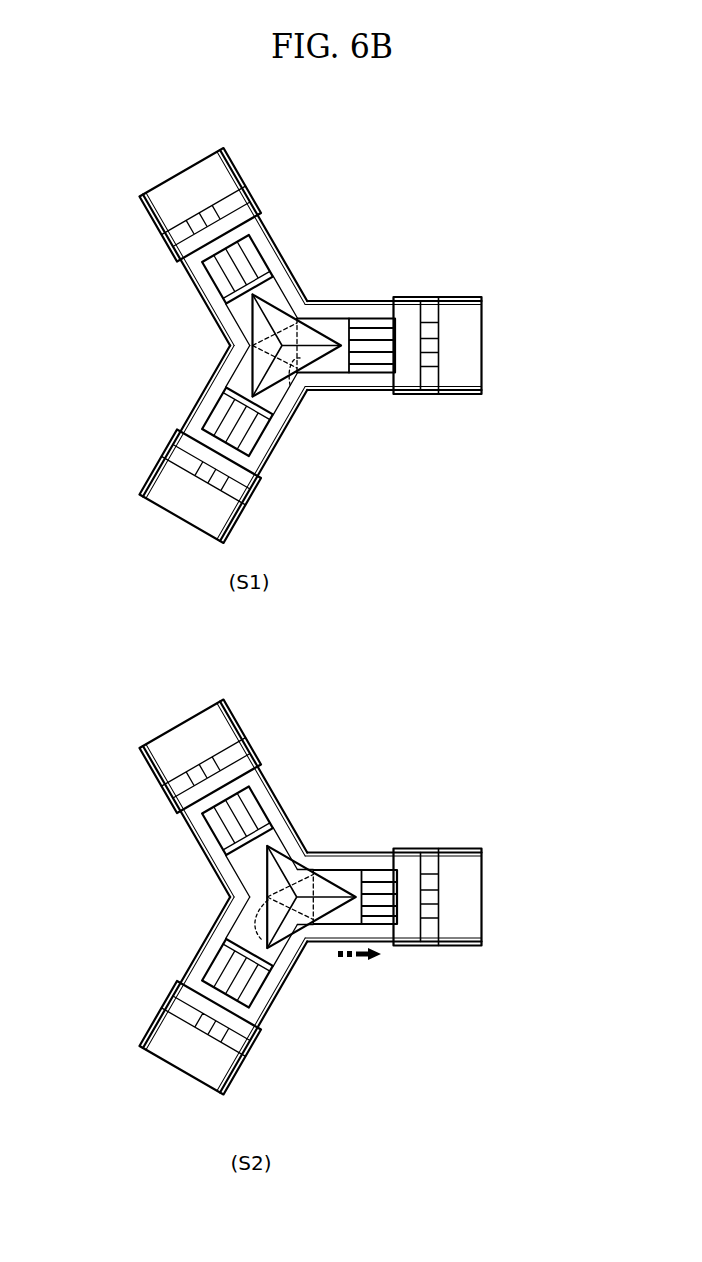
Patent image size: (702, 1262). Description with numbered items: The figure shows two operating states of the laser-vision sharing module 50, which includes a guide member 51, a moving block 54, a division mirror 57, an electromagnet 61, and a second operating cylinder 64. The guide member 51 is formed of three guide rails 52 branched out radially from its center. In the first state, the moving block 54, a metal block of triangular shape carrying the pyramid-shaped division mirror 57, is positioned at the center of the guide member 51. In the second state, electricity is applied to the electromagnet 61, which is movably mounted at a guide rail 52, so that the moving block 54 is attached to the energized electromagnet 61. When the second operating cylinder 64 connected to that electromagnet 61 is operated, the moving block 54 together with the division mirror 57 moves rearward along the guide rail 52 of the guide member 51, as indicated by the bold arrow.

The laser-vision sharing module 50 is at (268, 101).
The guide member 51 is at (199, 319).
The guide rail 52 is at (325, 925).
The moving block 54 is at (290, 385).
The division mirror 57 is at (322, 330).
The electromagnet 61 is at (350, 877).
The second operating cylinder 64 is at (466, 899).